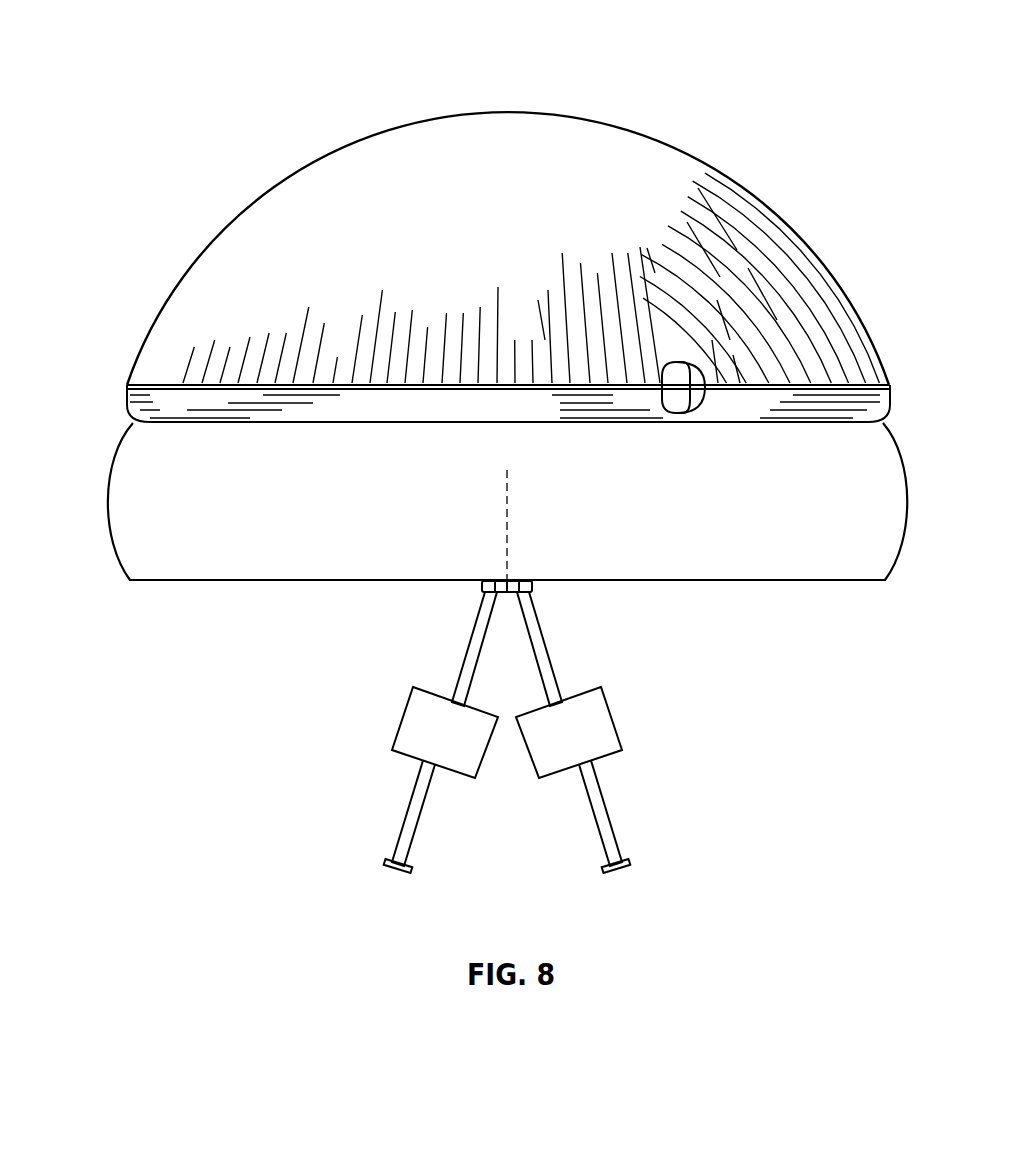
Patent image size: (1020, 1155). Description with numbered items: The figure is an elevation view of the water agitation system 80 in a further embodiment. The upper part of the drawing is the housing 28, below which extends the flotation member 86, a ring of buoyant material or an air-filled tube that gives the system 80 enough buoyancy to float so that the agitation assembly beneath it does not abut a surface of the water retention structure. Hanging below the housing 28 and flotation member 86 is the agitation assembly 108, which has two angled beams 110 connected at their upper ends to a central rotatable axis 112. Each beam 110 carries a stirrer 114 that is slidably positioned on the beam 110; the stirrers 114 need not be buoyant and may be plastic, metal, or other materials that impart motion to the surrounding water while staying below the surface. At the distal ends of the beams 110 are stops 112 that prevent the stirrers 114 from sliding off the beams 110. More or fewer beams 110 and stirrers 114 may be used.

The water agitation system 80 is at (312, 64).
The housing 28 is at (290, 176).
The flotation member 86 is at (133, 551).
The agitation assembly 108 is at (567, 590).
The angled beams 110 is at (465, 648).
The central rotatable axis / stops 112 is at (505, 578).
The stirrers 114 is at (402, 718).